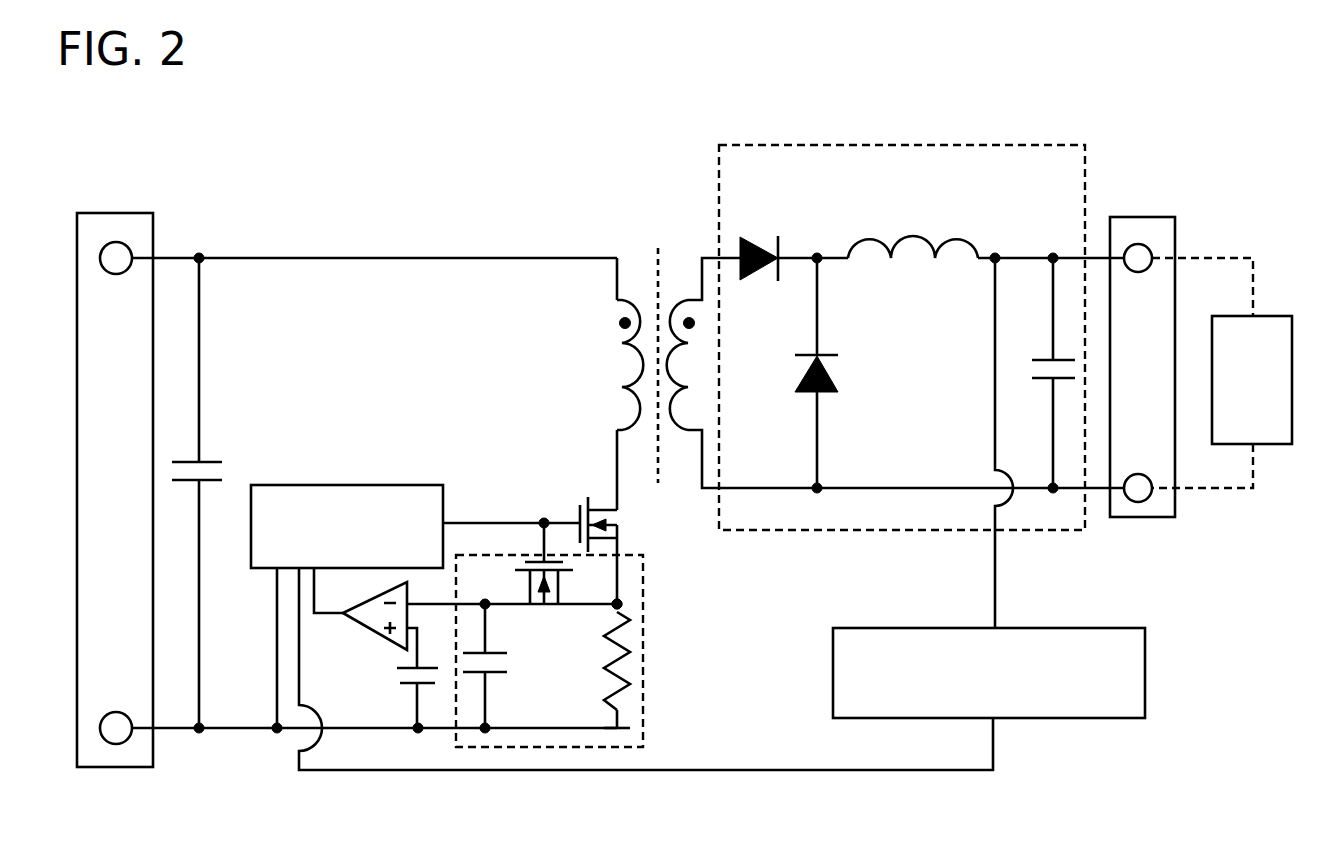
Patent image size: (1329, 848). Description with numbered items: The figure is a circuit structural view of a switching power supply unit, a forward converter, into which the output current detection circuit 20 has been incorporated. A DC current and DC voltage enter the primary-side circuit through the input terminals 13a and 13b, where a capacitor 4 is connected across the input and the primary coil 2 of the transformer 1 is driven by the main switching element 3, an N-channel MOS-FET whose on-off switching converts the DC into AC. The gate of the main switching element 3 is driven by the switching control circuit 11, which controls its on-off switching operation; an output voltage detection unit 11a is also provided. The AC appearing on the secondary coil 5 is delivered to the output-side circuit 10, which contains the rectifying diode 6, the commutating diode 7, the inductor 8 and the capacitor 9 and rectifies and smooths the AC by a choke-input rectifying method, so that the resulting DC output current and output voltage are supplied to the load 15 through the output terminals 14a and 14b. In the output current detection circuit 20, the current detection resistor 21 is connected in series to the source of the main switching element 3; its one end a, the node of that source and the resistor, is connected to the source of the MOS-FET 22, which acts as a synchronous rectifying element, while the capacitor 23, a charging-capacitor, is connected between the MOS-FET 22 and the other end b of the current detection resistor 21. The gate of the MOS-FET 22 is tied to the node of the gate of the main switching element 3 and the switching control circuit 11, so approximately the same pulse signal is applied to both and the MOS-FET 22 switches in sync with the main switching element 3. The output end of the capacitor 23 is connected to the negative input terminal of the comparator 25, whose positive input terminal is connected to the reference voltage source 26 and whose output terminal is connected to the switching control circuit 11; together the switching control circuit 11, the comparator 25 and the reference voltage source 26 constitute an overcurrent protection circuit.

The transformer 1 is at (658, 247).
The primary coil 2 is at (645, 360).
The main switching element 3 is at (581, 495).
The capacitor 4 is at (215, 455).
The secondary coil 5 is at (680, 437).
The rectifying diode 6 is at (757, 242).
The commutating diode 7 is at (837, 378).
The inductor 8 is at (931, 242).
The capacitor 9 is at (1043, 358).
The output-side circuit 10 is at (1084, 145).
The switching control circuit 11 is at (337, 485).
The output voltage detection unit 11a is at (1145, 682).
The input terminal 13a is at (118, 256).
The input terminal 13b is at (116, 735).
The output terminal 14a is at (1140, 250).
The output terminal 14b is at (1133, 500).
The load 15 is at (1290, 316).
The output current detection circuit 20 is at (643, 568).
The current detection resistor 21 is at (632, 658).
The MOS-FET 22 is at (537, 607).
The capacitor 23 is at (500, 678).
The comparator 25 is at (356, 622).
The reference voltage source 26 is at (400, 688).
The one end of the current detection resistor a is at (617, 614).
The other end of the current detection resistor b is at (617, 722).